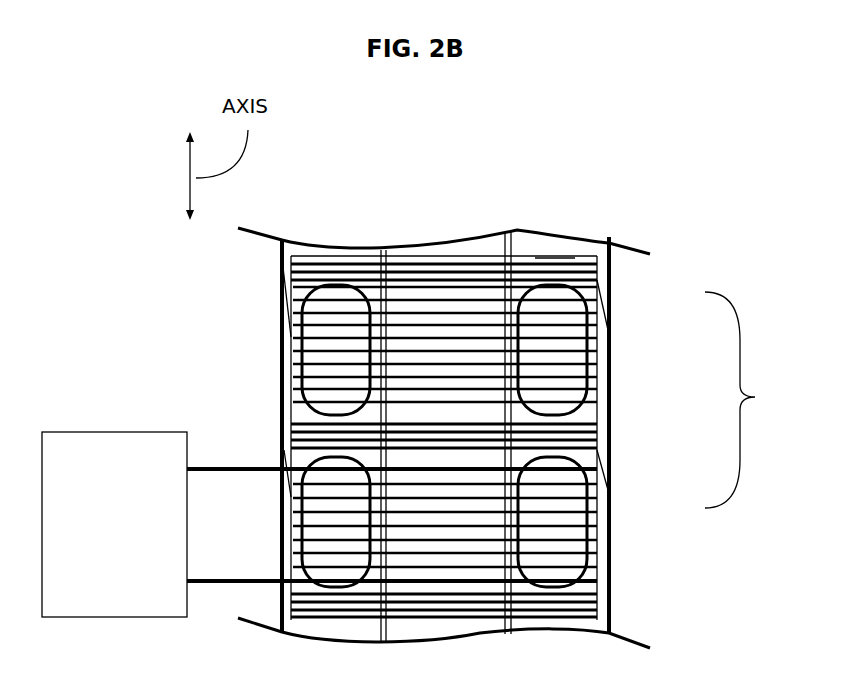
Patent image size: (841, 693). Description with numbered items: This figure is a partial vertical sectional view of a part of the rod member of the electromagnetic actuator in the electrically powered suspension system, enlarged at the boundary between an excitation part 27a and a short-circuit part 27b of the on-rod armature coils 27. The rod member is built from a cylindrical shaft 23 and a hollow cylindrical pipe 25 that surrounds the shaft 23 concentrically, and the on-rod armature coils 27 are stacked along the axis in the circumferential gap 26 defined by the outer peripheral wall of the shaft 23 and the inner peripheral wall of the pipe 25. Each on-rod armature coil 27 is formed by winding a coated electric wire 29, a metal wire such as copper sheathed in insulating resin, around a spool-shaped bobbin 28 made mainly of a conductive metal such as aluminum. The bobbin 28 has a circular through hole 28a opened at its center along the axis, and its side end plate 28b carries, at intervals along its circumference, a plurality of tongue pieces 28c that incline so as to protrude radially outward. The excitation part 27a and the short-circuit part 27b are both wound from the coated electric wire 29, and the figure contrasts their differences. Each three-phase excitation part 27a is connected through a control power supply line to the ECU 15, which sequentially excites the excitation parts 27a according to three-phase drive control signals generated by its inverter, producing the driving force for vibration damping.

The electronic control unit 15 is at (118, 432).
The shaft 23 is at (503, 256).
The pipe 25 is at (612, 276).
The circumferential gap 26 is at (556, 243).
The on-rod armature coil 27 is at (755, 397).
The excitation part 27a is at (604, 520).
The short-circuit part 27b is at (604, 349).
The bobbin 28 is at (282, 268).
The circular through hole 28a is at (497, 252).
The side end plate 28b is at (356, 254).
The tongue piece 28c is at (283, 284).
The coated electric wire 29 is at (298, 357).